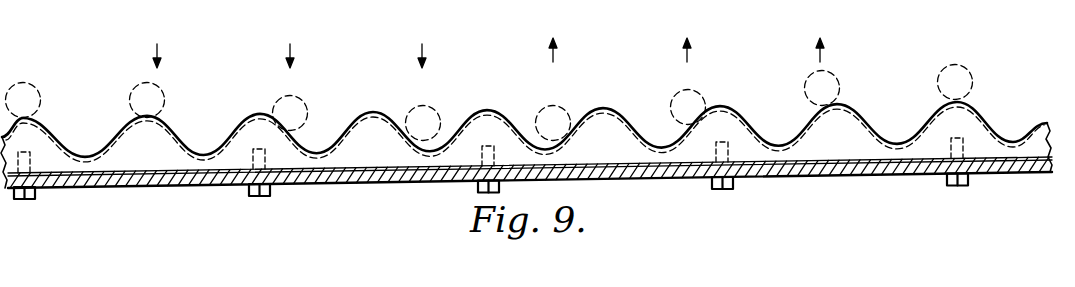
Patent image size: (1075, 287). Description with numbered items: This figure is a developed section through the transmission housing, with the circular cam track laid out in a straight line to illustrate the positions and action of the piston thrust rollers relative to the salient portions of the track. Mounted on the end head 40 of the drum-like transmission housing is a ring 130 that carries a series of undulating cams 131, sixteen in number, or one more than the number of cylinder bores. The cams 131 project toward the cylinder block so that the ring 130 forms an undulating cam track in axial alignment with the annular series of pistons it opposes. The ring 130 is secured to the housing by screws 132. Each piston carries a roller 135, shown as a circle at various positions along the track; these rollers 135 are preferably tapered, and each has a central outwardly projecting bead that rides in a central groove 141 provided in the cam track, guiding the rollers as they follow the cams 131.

The end head 40 is at (223, 188).
The ring 130 is at (158, 164).
The undulating cams 131 is at (178, 139).
The screws 132 is at (268, 197).
The roller 135 is at (407, 115).
The central groove 141 is at (499, 108).